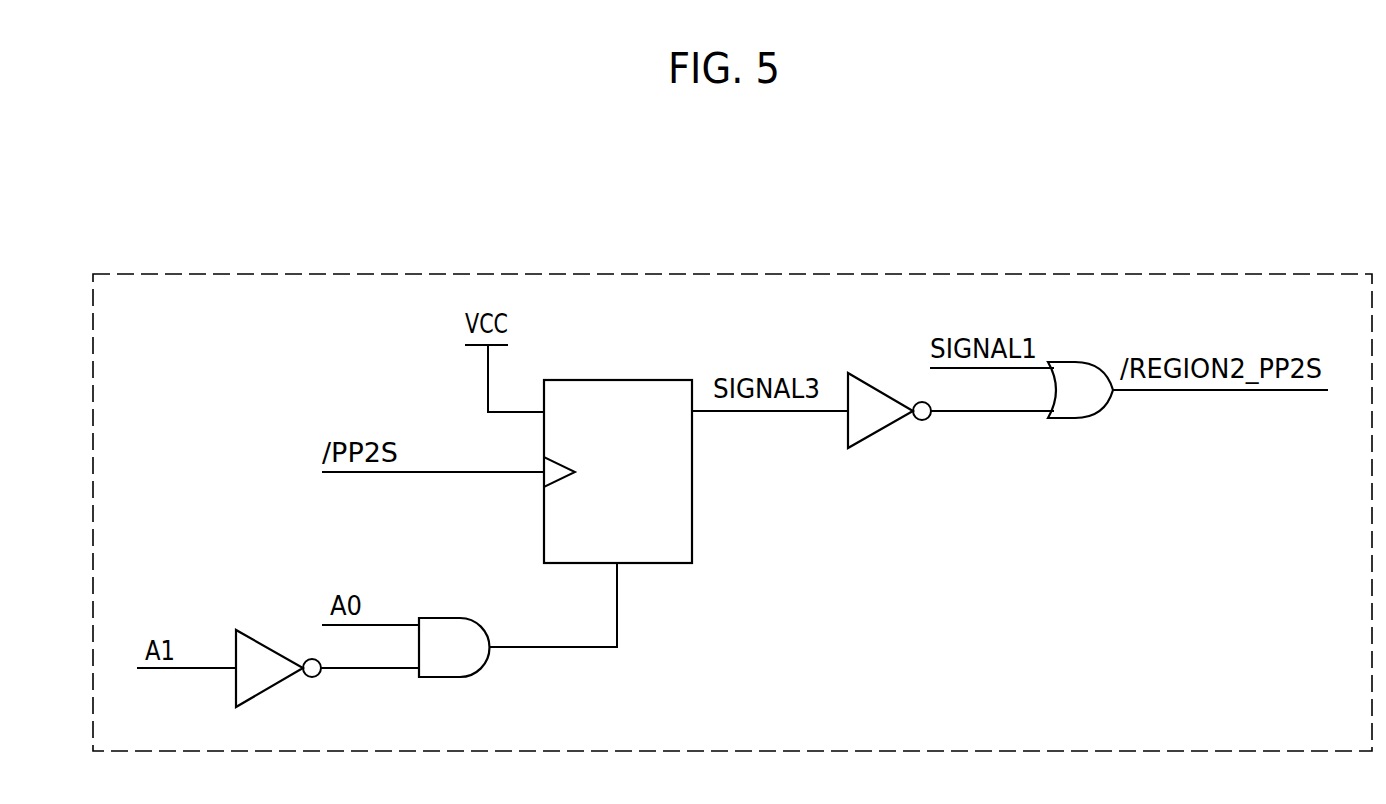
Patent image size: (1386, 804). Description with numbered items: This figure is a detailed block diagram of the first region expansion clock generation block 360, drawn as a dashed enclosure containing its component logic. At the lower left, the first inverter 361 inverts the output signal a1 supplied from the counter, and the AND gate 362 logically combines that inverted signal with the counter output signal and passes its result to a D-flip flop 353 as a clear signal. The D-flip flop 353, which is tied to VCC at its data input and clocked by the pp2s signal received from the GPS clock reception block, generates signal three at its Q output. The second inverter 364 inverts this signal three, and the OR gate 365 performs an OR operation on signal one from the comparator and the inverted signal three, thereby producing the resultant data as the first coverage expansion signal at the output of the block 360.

The first region expansion clock generation block 360 is at (1186, 274).
The D flip-flop with set/reset 353 is at (620, 380).
The first inverter 361 is at (254, 631).
The AND gate 362 is at (437, 618).
The second inverter 364 is at (862, 445).
The OR gate 365 is at (1058, 420).